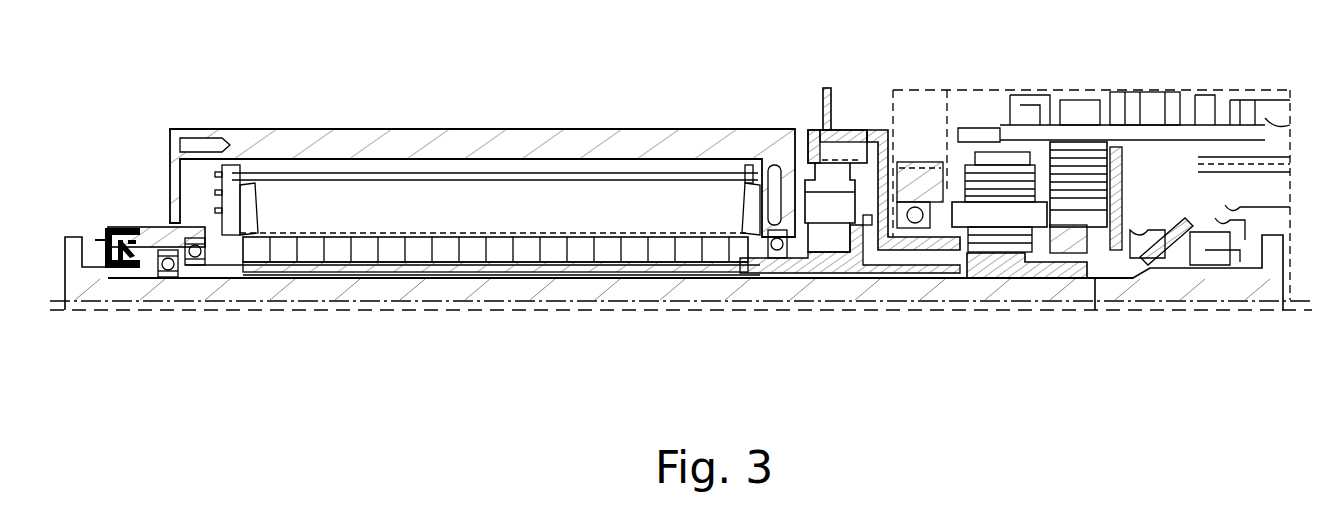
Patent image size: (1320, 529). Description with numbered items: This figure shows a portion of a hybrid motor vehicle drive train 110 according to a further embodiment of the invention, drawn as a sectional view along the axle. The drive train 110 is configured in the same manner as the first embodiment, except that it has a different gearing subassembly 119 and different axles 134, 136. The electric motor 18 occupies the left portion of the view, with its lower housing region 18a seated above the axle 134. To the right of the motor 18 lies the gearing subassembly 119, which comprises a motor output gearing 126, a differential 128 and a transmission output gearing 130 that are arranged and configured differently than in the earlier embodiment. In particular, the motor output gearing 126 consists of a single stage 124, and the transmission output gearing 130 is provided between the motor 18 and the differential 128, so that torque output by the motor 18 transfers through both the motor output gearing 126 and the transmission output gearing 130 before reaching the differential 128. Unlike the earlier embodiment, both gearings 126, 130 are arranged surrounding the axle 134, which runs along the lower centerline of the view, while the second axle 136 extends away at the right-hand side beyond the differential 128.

The motor 18 is at (483, 128).
The housing bearing seat 18a is at (782, 280).
The hybrid motor vehicle drive train 110 is at (232, 340).
The gearing subassembly 119 is at (785, 107).
The single stage 124 is at (838, 123).
The motor output gearing 126 is at (820, 130).
The differential 128 is at (1027, 288).
The transmission output gearing 130 is at (1070, 135).
The axle 134 is at (508, 292).
The axle 136 is at (1192, 292).